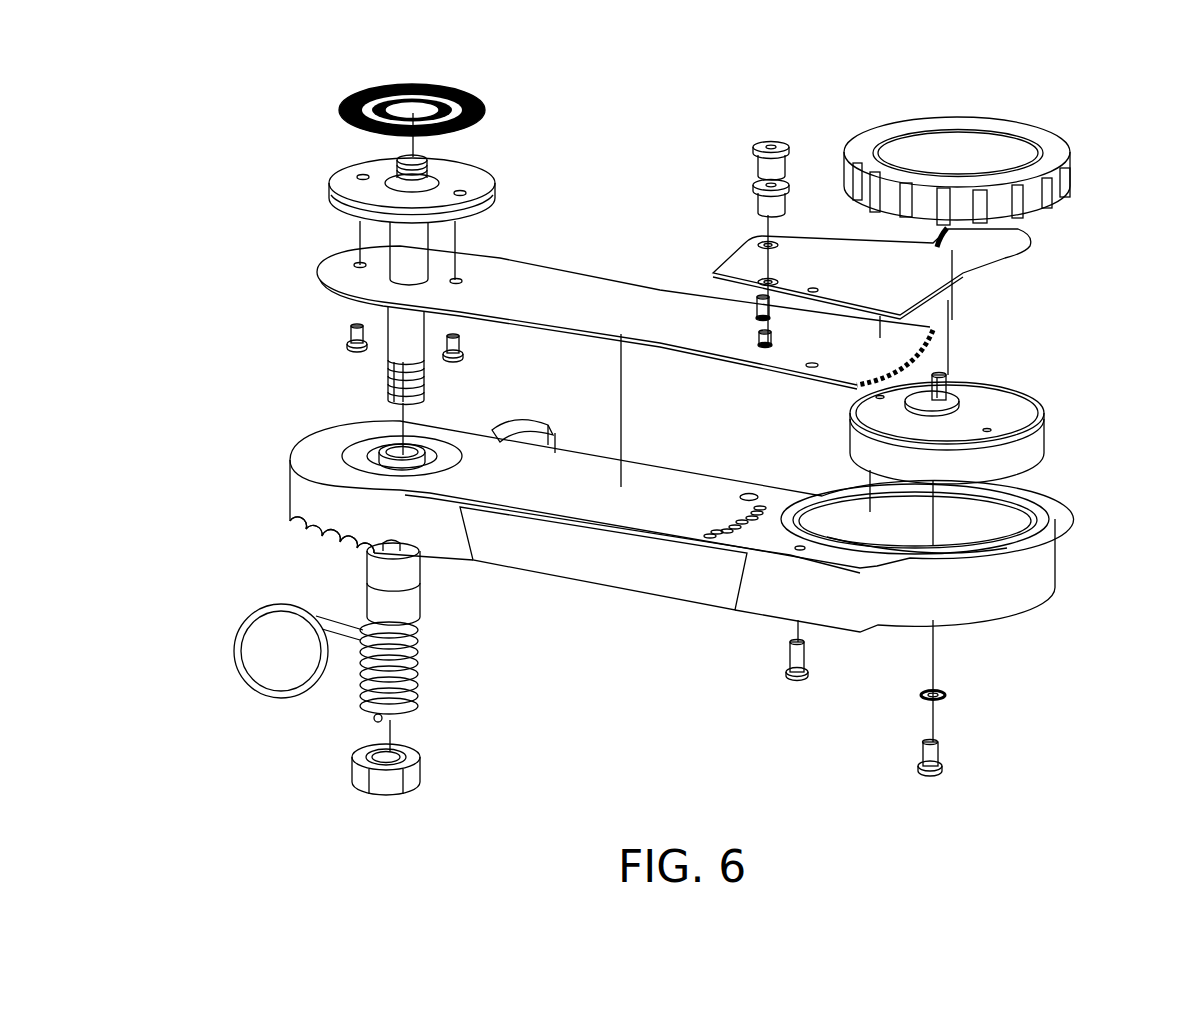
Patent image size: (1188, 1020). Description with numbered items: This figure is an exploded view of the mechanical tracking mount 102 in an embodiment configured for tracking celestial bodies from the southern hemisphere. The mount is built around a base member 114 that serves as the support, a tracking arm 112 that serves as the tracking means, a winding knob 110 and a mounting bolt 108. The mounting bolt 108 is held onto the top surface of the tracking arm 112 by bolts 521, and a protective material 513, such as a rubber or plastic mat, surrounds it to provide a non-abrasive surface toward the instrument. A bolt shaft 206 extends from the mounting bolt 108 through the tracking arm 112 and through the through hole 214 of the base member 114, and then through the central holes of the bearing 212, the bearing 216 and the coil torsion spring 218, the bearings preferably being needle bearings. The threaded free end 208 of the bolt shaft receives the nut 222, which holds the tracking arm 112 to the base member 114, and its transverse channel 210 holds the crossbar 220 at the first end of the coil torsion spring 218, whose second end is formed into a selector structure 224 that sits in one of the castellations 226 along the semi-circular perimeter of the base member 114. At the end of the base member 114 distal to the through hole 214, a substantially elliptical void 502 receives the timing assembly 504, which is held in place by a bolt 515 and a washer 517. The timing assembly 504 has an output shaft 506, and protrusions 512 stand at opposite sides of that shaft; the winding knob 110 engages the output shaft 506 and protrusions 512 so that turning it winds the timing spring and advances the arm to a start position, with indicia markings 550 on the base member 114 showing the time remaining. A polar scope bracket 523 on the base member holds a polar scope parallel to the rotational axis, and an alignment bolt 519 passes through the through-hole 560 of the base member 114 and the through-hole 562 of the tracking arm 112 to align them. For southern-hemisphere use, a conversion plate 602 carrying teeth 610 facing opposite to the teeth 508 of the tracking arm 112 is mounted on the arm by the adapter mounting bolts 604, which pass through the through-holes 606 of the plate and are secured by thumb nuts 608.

The mechanical tracking mount 102 is at (651, 96).
The mounting bolt 108 is at (428, 159).
The winding knob 110 is at (1050, 144).
The tracking arm 112 is at (527, 273).
The base member 114 is at (665, 578).
The bolt shaft 206 is at (395, 312).
The free end 208 is at (433, 386).
The transverse channel 210 is at (389, 386).
The bearing 212 is at (383, 565).
The through hole 214 is at (300, 453).
The bearing 216 is at (415, 598).
The coil torsion spring 218 is at (415, 676).
The crossbar 220 is at (373, 722).
The nut 222 is at (420, 757).
The selector structure 224 is at (238, 652).
The castellations 226 is at (291, 532).
The void 502 is at (1035, 527).
The timing assembly 504 is at (1013, 408).
The output shaft 506 is at (952, 385).
The teeth 508 is at (905, 343).
The protrusions 512 is at (965, 398).
The protective material 513 is at (485, 102).
The bolt 515 is at (920, 752).
The washer 517 is at (925, 695).
The alignment bolt 519 is at (790, 668).
The bolts 521 is at (343, 342).
The polar scope bracket 523 is at (548, 424).
The indicia markings 550 is at (745, 494).
The through-hole 560 is at (800, 545).
The through-hole 562 is at (812, 370).
The conversion plate 602 is at (1018, 247).
The adapter mounting bolts 604 is at (756, 302).
The through-holes 606 is at (760, 245).
The thumb nuts 608 is at (765, 165).
The teeth 610 is at (933, 245).